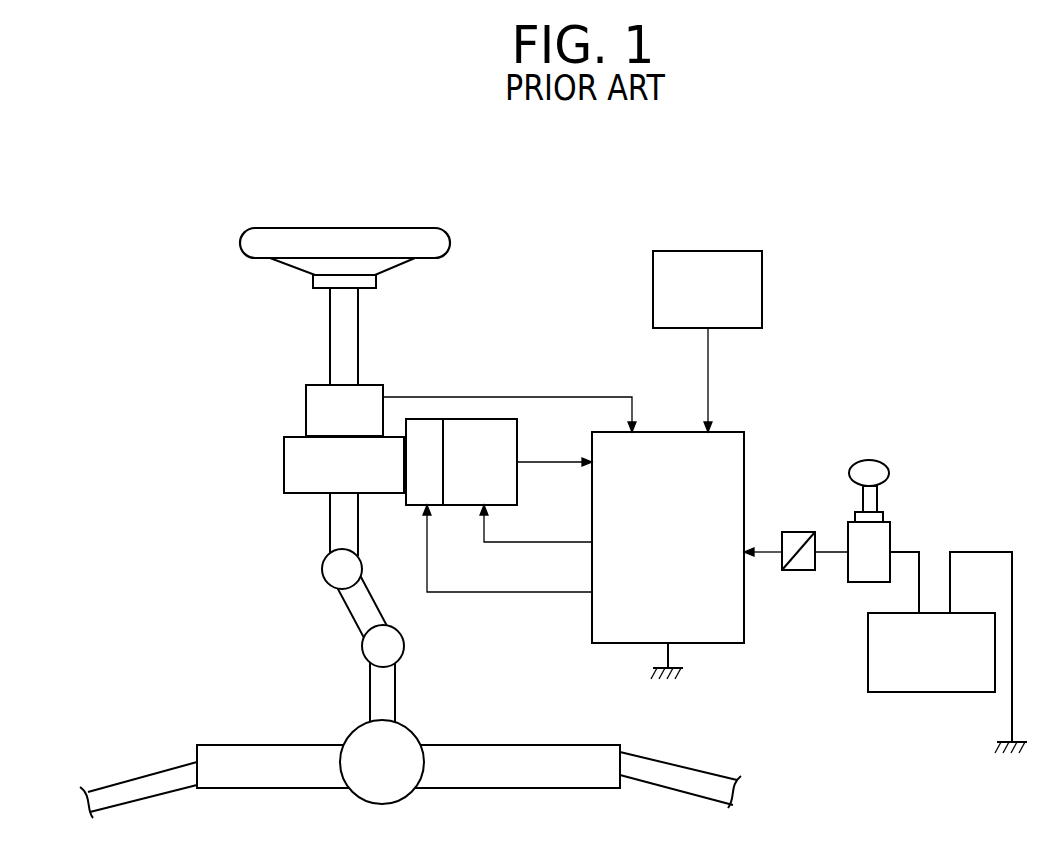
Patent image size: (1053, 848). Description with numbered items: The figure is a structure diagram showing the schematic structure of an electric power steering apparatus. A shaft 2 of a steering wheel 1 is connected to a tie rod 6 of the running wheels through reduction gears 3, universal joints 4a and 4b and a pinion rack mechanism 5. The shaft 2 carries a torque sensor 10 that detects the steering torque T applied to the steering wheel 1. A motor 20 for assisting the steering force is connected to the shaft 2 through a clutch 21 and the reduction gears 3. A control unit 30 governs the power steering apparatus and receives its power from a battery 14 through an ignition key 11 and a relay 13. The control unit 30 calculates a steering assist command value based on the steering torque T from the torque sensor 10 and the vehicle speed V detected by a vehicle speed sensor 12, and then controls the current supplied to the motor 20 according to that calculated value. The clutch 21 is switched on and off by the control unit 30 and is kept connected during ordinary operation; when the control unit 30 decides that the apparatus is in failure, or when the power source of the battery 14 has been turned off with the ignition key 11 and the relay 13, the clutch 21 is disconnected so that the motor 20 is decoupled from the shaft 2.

The steering wheel 1 is at (433, 236).
The shaft 2 is at (330, 331).
The reduction gears 3 is at (284, 470).
The torque sensor 10 is at (306, 413).
The universal joint 4a is at (322, 570).
The universal joint 4b is at (362, 647).
The pinion rack mechanism 5 is at (440, 708).
The tie rod 6 is at (665, 772).
The motor 20 is at (488, 419).
The clutch 21 is at (429, 419).
The control unit 30 is at (730, 432).
The vehicle speed sensor 12 is at (738, 251).
The ignition key 11 is at (890, 473).
The relay 13 is at (800, 570).
The battery 14 is at (903, 680).
The steering torque T is at (557, 397).
The vehicle speed V is at (708, 380).